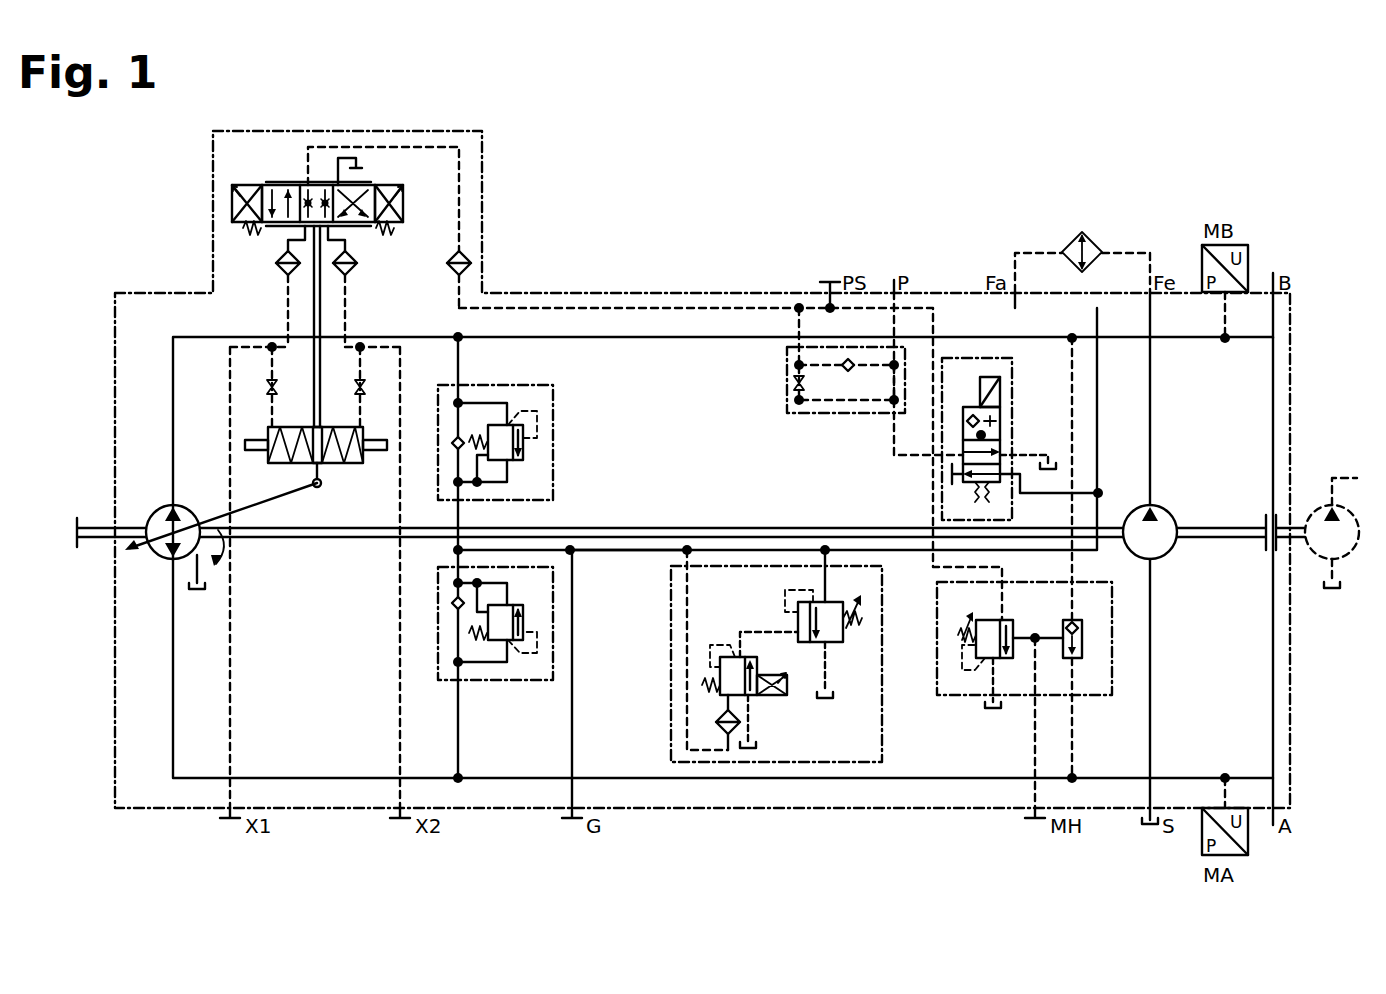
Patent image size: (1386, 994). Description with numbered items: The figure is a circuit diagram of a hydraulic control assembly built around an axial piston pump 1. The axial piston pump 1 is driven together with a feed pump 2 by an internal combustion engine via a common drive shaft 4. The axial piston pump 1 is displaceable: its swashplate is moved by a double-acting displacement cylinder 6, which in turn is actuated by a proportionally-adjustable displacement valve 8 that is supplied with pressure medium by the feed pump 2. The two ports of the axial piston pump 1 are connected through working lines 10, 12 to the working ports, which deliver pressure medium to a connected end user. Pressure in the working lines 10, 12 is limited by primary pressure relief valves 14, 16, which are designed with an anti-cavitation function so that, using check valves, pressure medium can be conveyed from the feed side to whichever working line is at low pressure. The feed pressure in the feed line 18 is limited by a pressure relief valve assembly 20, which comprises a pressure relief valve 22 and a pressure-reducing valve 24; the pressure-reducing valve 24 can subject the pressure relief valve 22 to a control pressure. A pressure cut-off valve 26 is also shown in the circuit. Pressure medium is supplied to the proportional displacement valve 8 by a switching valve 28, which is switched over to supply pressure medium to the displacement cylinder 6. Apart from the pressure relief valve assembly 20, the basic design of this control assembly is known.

The axial piston pump 1 is at (148, 520).
The feed pump 2 is at (1170, 548).
The drive shaft 4 is at (98, 532).
The double-acting displacement cylinder 6 is at (265, 440).
The proportionally-adjustable displacement valve 8 is at (290, 183).
The working line 10 is at (173, 685).
The working line 12 is at (173, 370).
The primary pressure relief valve 14 is at (510, 680).
The primary pressure relief valve 16 is at (507, 385).
The feed line 18 is at (620, 550).
The pressure relief valve assembly 20 is at (783, 726).
The pressure relief valve 22 is at (837, 642).
The pressure-reducing valve 24 is at (740, 680).
The pressure cut-off valve 26 is at (940, 695).
The switching valve 28 is at (1012, 410).